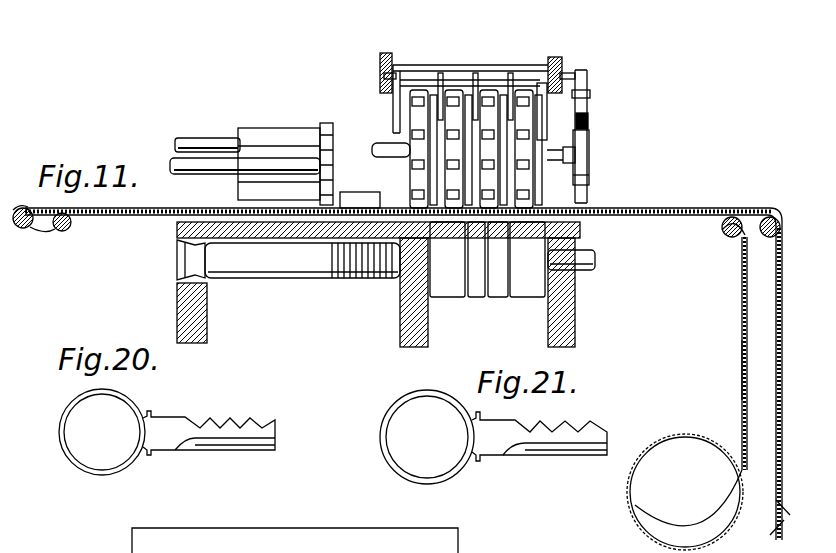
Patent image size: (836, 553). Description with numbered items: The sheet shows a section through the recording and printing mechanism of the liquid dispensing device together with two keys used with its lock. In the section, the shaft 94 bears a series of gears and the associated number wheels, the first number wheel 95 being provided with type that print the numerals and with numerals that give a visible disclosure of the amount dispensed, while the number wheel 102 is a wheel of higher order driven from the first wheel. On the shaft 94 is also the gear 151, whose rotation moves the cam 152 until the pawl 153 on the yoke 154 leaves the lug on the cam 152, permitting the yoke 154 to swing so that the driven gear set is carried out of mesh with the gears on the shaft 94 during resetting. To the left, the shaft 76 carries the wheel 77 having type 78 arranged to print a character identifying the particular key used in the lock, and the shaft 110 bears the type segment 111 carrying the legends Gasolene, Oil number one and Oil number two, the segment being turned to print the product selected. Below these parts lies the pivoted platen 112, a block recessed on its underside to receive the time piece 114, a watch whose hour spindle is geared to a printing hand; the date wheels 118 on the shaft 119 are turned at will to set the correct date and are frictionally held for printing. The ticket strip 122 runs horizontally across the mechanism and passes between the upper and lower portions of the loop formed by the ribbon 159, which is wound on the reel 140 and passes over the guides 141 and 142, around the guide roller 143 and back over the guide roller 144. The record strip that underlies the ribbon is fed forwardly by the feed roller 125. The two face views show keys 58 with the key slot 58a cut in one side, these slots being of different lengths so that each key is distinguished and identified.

In FIG. 20, the key 58 is at (76, 468).
In FIG. 21, the key 58 is at (392, 412).
In FIG. 20, the key slot 58a is at (188, 448).
In FIG. 21, the key slot 58a is at (520, 447).
In FIG. 11, the shaft 76 is at (230, 160).
In FIG. 11, the wheel 77 is at (348, 118).
In FIG. 11, the type 78 is at (336, 198).
In FIG. 11, the shaft 94 is at (553, 150).
In FIG. 11, the first number wheel 95 is at (535, 110).
In FIG. 11, the number wheel 102 is at (490, 95).
In FIG. 11, the shaft 110 is at (203, 127).
In FIG. 11, the type segment 111 is at (245, 177).
In FIG. 11, the platen 112 is at (405, 318).
In FIG. 11, the time piece 114 is at (280, 262).
In FIG. 11, the date wheels 118 is at (500, 315).
In FIG. 11, the shaft 119 is at (580, 272).
In FIG. 11, the ticket strip 122 is at (548, 209).
In FIG. 11, the feed roller 125 is at (347, 255).
In FIG. 11, the reel 140 is at (685, 492).
In FIG. 11, the guide 141 is at (728, 237).
In FIG. 11, the guide 142 is at (85, 238).
In FIG. 11, the guide roller 143 is at (22, 207).
In FIG. 11, the guide roller 144 is at (778, 205).
In FIG. 11, the gear 151 is at (590, 122).
In FIG. 11, the cam 152 is at (590, 152).
In FIG. 11, the pawl 153 is at (588, 93).
In FIG. 11, the yoke 154 is at (502, 56).
In FIG. 11, the tape strip 159 is at (742, 343).